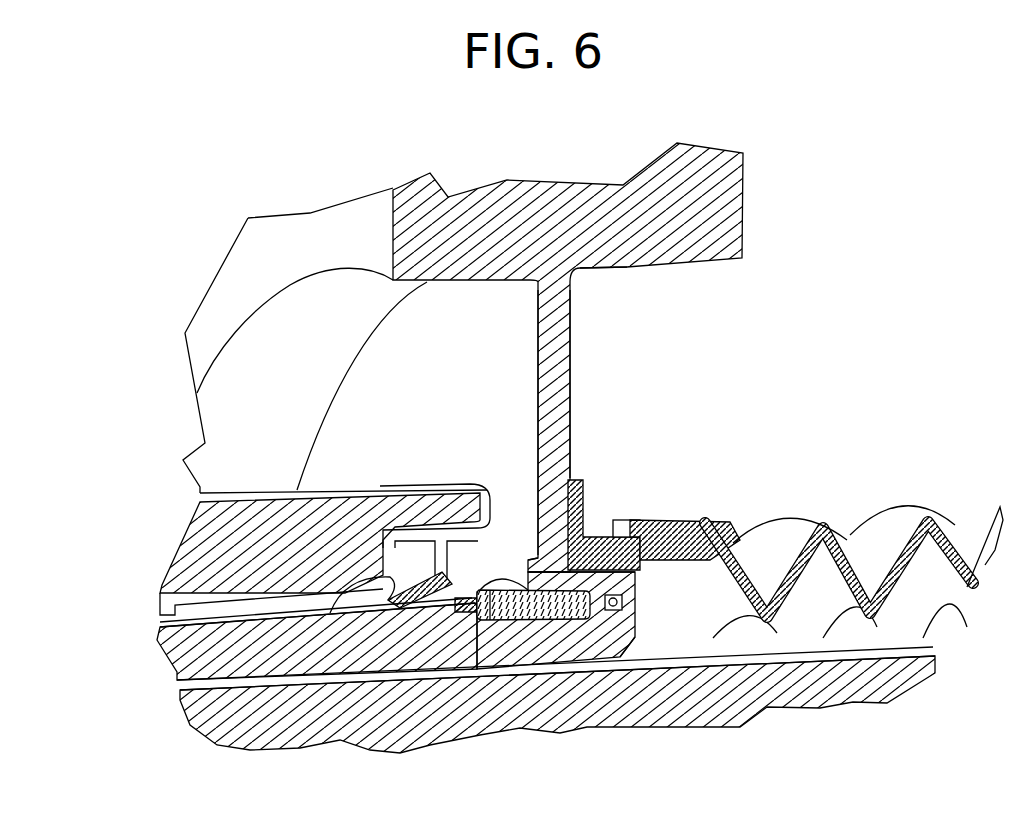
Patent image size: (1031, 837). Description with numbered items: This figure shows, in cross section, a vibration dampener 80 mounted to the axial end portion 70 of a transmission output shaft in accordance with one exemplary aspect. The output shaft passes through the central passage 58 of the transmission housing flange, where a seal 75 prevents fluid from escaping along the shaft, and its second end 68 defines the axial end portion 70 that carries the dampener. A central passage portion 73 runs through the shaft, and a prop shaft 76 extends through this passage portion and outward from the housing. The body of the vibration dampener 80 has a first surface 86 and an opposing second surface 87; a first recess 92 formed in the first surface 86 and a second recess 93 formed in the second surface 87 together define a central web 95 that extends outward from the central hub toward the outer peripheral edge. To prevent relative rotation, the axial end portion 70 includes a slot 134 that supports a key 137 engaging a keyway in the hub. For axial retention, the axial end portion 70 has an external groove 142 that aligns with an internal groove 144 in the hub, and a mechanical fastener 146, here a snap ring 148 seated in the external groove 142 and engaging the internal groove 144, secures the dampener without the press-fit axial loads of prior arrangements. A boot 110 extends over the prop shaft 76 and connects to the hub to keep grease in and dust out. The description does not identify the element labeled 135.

The vibration dampener 80 is at (195, 242).
The second surface 87 is at (307, 232).
The second recess 93 is at (250, 350).
The first surface 86 is at (745, 198).
The central web 95 is at (565, 300).
The first recess 92 is at (640, 383).
The slot 134 is at (507, 577).
The key 137 is at (600, 505).
The snap ring 148 is at (640, 530).
The internal groove 144 is at (700, 540).
The boot 110 is at (920, 500).
The seal 75 is at (462, 542).
The central passage 58 is at (212, 612).
The central passage portion 73 is at (350, 690).
The support layer 135 is at (485, 600).
The axial end portion 70 is at (592, 647).
The external groove 142 is at (602, 598).
The second end 68 is at (645, 642).
The mechanical fastener 146 is at (625, 605).
The prop shaft 76 is at (890, 706).